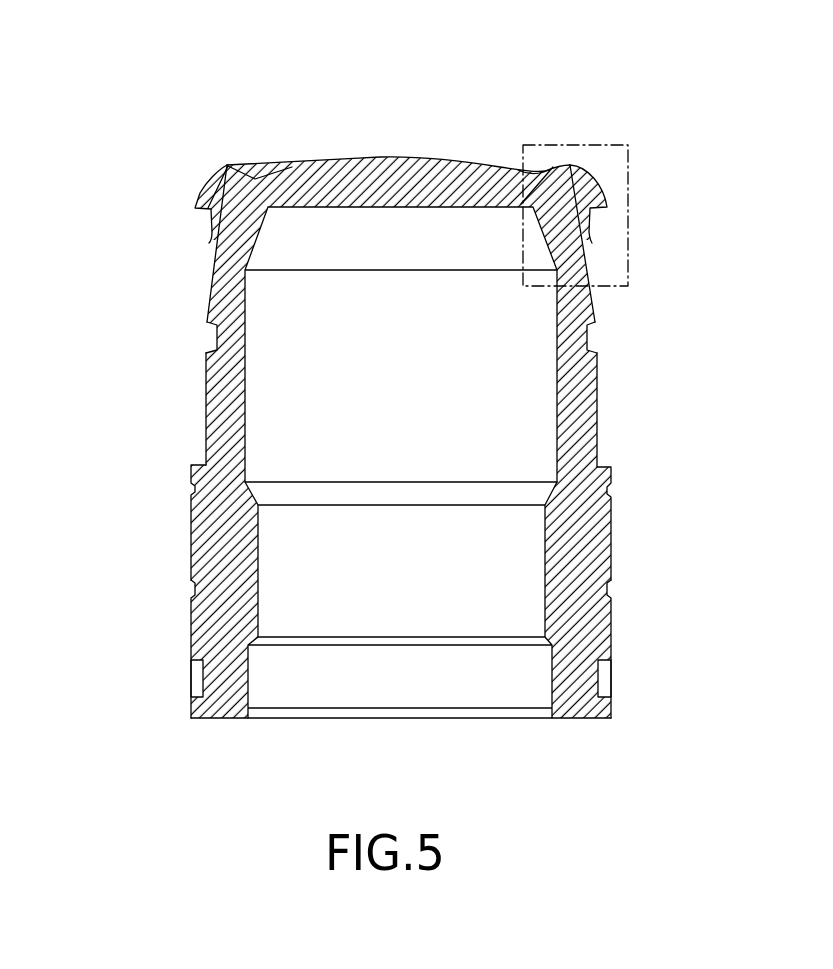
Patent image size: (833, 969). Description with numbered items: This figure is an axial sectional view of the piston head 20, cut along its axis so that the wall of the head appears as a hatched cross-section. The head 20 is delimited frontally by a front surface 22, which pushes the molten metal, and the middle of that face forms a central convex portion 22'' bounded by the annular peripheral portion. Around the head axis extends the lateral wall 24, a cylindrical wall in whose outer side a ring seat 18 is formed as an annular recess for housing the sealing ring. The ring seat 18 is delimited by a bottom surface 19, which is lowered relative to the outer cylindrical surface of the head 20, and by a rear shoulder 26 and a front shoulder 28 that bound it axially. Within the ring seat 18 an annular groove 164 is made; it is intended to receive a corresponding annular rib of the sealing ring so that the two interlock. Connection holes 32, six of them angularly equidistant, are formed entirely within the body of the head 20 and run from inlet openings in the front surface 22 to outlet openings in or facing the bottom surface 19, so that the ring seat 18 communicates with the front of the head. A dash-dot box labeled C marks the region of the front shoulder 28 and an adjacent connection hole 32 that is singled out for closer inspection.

The ring seat 18 is at (599, 424).
The bottom surface 19 is at (207, 402).
The head 20 is at (686, 468).
The front surface 22 is at (392, 251).
The central convex portion 22'' is at (398, 108).
The lateral wall 24 is at (583, 563).
The rear shoulder 26 is at (199, 466).
The front shoulder 28 is at (197, 210).
The connection holes 32 is at (598, 183).
The annular groove 164 is at (588, 337).
The detail region C is at (578, 145).